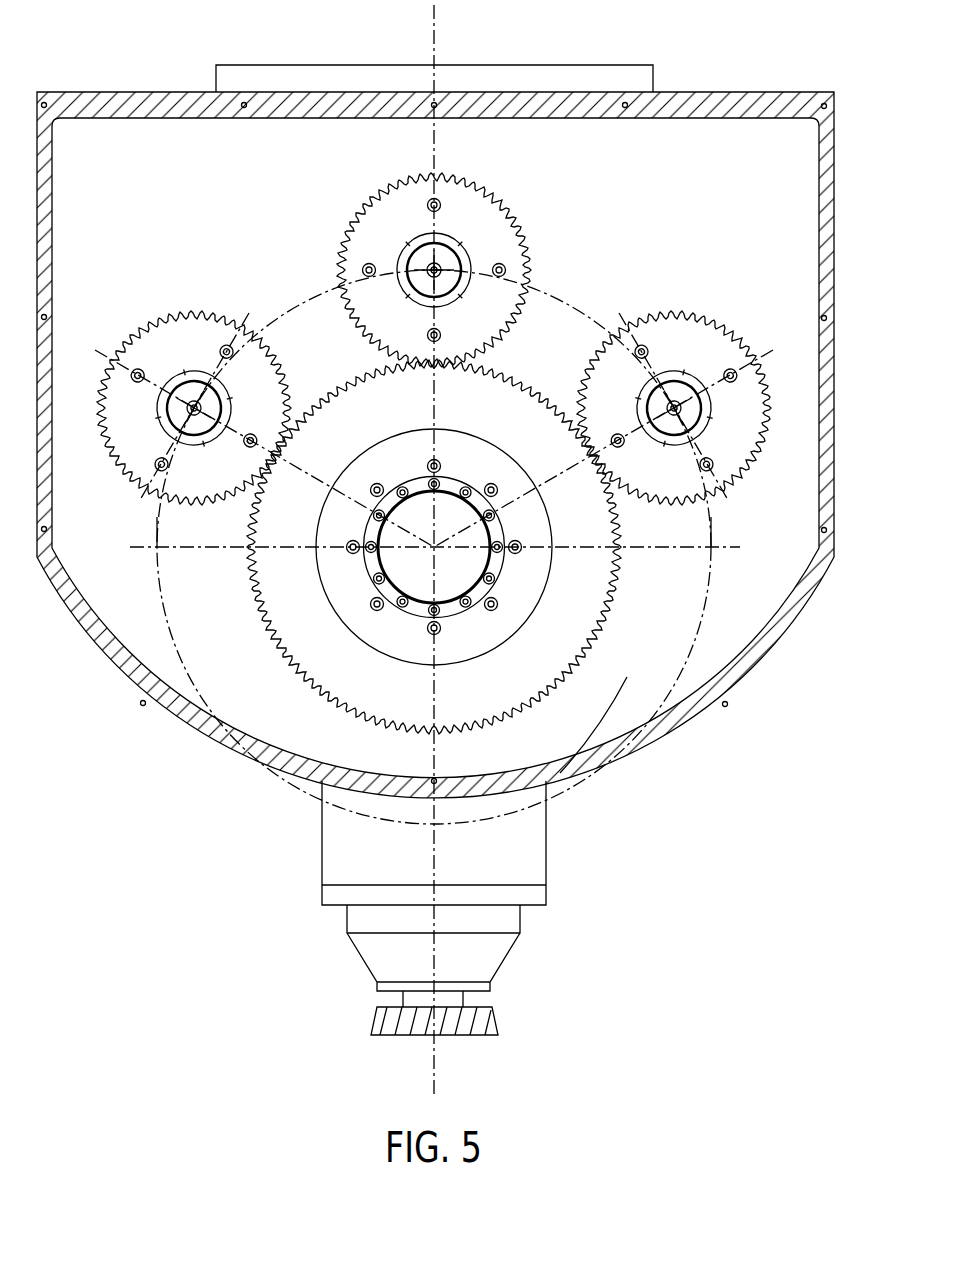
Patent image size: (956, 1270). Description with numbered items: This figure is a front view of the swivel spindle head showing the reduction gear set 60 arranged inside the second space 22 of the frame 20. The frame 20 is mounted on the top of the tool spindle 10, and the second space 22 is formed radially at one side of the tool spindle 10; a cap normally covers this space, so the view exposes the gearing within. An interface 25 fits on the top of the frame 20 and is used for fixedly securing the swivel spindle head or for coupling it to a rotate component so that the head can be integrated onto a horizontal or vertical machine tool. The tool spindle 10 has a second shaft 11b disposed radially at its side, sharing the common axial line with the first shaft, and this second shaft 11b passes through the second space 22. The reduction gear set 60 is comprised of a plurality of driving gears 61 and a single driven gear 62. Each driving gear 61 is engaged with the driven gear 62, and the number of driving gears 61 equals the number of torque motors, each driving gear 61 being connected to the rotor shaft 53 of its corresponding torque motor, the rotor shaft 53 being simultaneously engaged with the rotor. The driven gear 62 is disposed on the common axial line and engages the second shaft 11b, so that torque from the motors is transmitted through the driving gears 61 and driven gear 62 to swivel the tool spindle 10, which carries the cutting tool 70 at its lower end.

The tool spindle 10 is at (368, 958).
The second shaft 11b is at (388, 562).
The frame 20 is at (137, 90).
The second space 22 is at (652, 710).
The interface 25 is at (345, 62).
The rotor shaft 53 is at (447, 258).
The reduction gear set 60 is at (677, 615).
The driving gear 61 is at (353, 200).
The driven gear 62 is at (572, 633).
The cutting tool 70 is at (380, 1018).